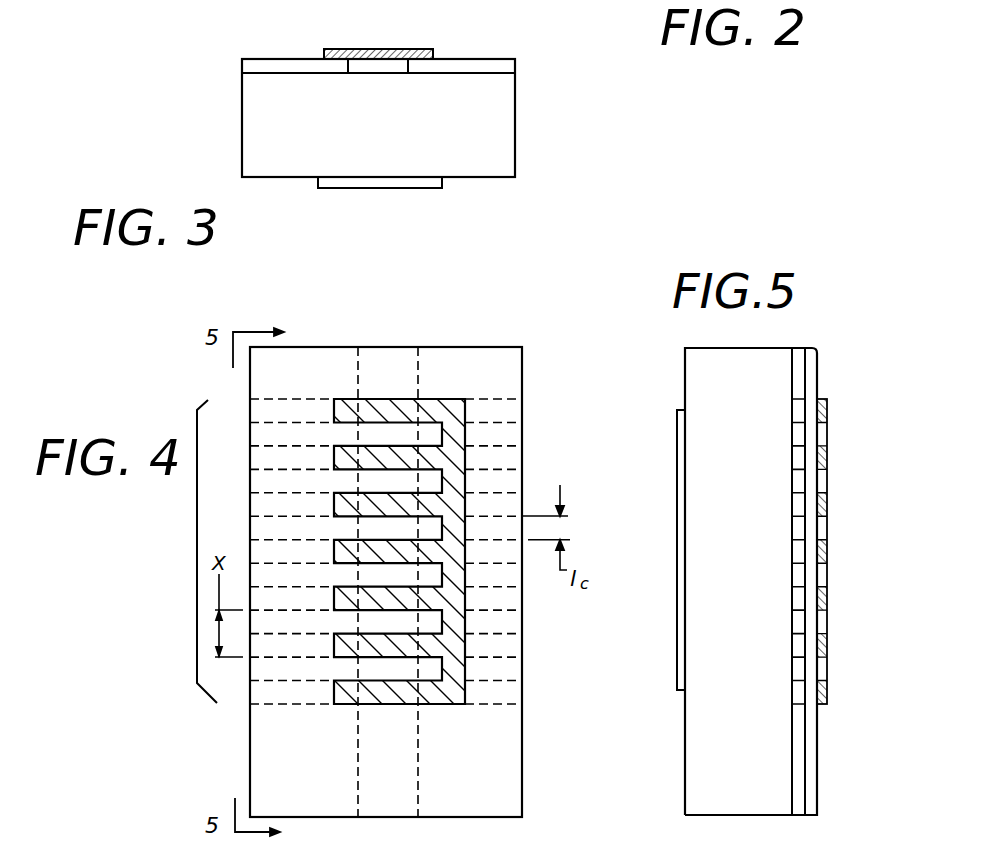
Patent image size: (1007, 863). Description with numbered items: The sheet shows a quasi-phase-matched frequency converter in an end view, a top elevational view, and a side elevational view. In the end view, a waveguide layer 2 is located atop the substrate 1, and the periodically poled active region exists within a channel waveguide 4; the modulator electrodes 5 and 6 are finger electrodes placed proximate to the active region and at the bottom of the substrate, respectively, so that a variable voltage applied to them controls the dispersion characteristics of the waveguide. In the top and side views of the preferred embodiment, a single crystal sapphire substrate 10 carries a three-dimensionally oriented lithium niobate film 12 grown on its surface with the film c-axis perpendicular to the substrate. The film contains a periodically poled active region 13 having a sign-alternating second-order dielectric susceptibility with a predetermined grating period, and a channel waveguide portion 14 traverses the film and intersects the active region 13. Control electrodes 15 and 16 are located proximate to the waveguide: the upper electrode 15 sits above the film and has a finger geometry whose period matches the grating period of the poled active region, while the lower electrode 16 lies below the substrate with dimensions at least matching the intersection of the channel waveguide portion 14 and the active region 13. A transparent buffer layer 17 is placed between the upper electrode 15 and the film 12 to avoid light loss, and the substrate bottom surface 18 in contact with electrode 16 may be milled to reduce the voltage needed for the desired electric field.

In FIG. 3, the substrate 1 is at (516, 110).
In FIG. 3, the waveguide layer 2 is at (480, 66).
In FIG. 3, the channel waveguide 4 is at (390, 73).
In FIG. 3, the modulator electrode 5 is at (393, 48).
In FIG. 3, the modulator electrode 6 is at (420, 178).
In FIG. 4, the single crystal sapphire substrate 10 is at (513, 749).
In FIG. 5, the single crystal sapphire substrate 10 is at (698, 385).
In FIG. 5, the LiNbO3 film 12 is at (797, 349).
In FIG. 4, the active region 13 is at (197, 533).
In FIG. 4, the channel waveguide portion 14 is at (387, 360).
In FIG. 4, the upper electrode 15 is at (446, 399).
In FIG. 5, the upper electrode 15 is at (827, 478).
In FIG. 5, the lower electrode 16 is at (681, 487).
In FIG. 4, the buffer layer 17 is at (508, 374).
In FIG. 5, the buffer layer 17 is at (817, 367).
In FIG. 5, the substrate bottom surface 18 is at (688, 768).